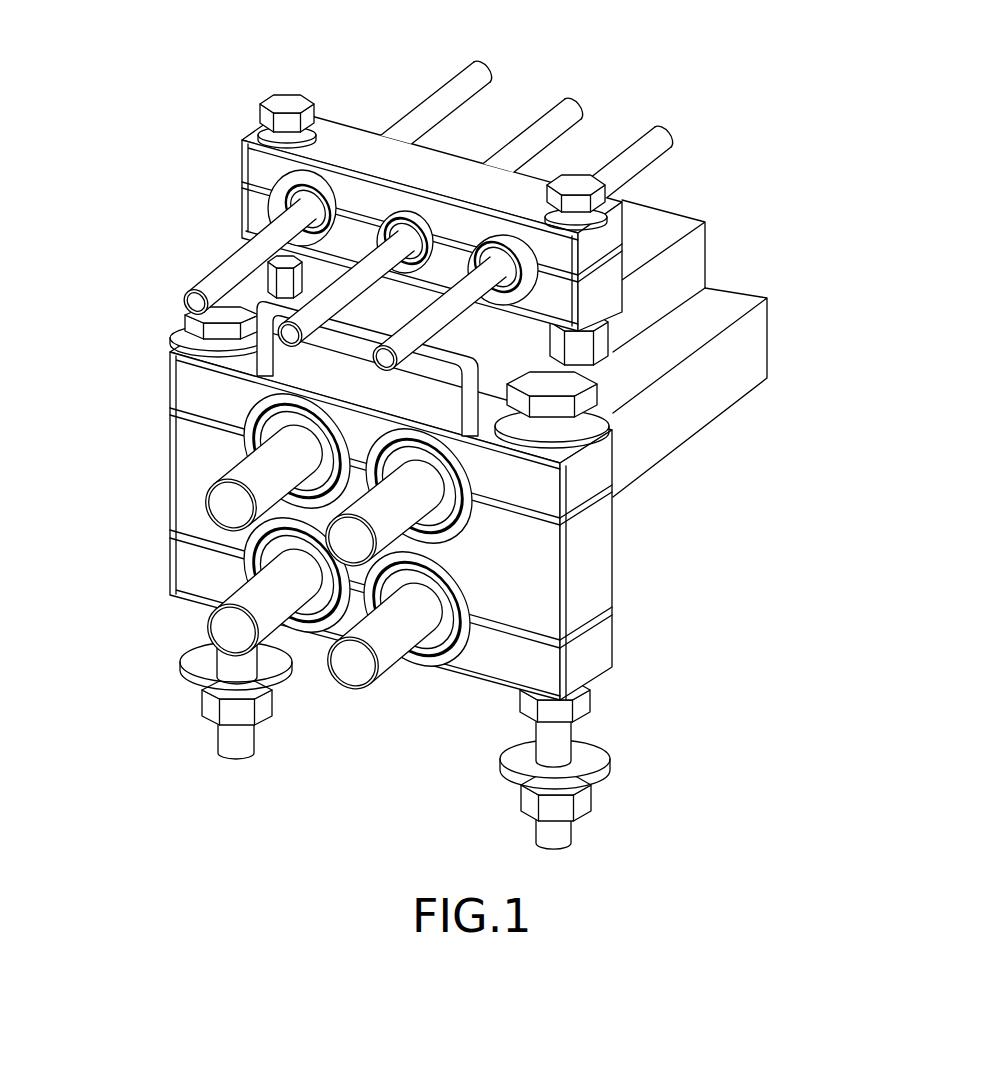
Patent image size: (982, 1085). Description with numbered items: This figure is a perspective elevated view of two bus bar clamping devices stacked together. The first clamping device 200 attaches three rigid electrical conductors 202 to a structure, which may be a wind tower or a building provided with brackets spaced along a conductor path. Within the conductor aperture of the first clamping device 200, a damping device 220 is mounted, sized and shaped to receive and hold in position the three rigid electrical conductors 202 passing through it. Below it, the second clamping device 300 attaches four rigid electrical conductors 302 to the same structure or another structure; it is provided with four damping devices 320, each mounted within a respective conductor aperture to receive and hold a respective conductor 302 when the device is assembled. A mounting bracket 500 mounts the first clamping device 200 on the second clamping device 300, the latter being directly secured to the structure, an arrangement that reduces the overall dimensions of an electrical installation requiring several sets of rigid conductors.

The first clamping device 200 is at (450, 187).
The rigid electrical conductors 202 is at (473, 80).
The damping device 220 is at (276, 177).
The second clamping device 300 is at (438, 524).
The rigid electrical conductors 302 is at (267, 487).
The damping devices 320 is at (238, 409).
The mounting bracket 500 is at (483, 340).